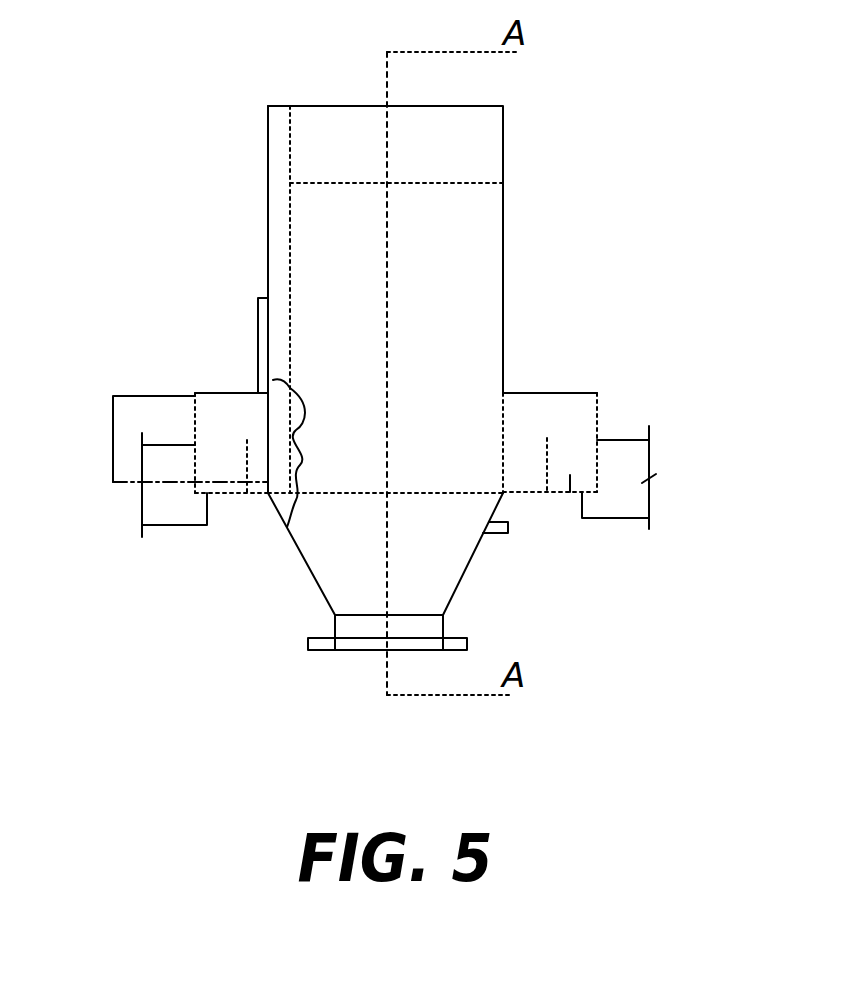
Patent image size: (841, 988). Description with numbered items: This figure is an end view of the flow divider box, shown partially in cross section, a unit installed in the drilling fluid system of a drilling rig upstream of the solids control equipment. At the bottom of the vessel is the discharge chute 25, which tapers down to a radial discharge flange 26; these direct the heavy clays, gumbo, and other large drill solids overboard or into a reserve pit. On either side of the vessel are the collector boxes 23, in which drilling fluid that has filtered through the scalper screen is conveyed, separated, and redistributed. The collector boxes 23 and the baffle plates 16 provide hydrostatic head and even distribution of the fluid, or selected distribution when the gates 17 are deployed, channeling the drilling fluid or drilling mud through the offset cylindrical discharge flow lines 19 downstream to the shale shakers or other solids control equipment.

The baffle plate 16 is at (252, 457).
The gate 17 is at (259, 309).
The cylindrical discharge flow line 19 is at (638, 498).
The collector box 23 is at (217, 408).
The discharge chute 25 is at (458, 533).
The radial discharge flange 26 is at (365, 653).